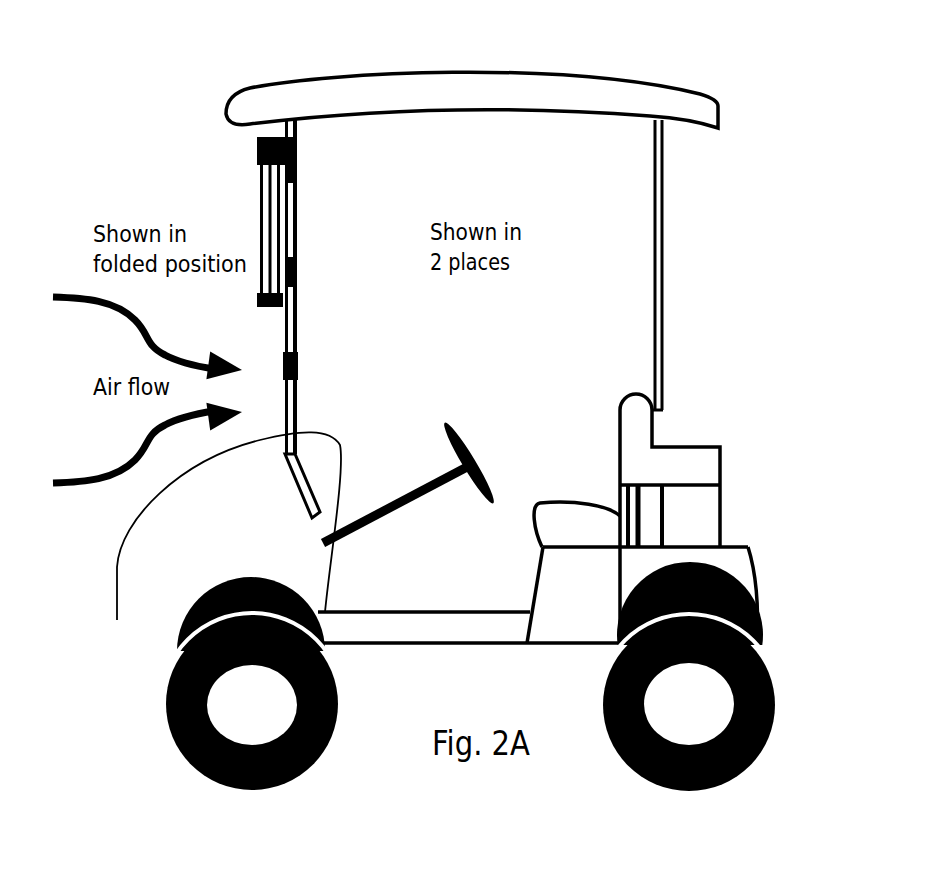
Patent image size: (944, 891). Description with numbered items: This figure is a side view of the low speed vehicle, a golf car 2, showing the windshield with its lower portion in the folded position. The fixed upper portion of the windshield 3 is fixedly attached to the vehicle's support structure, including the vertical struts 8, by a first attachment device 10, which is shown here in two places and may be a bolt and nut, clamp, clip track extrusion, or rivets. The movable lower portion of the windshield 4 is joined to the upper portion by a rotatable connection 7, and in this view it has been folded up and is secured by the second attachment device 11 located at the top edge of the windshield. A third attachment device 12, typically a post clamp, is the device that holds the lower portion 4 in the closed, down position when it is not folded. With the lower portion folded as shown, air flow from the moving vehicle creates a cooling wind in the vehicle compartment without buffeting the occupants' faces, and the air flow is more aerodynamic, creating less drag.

The golf car/vehicle 2 is at (527, 67).
The upper portion of the windshield 3 is at (335, 287).
The lower portion of the windshield 4 is at (219, 230).
The rotatable connection 7 is at (296, 330).
The vertical struts or vertical frame members 8 is at (347, 459).
The first attachment device 10 is at (350, 253).
The second attachment device 11 is at (214, 131).
The third attachment device 12 is at (340, 361).